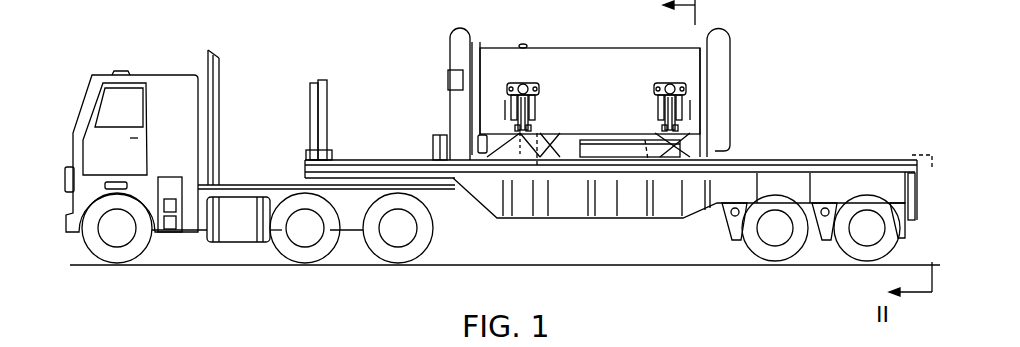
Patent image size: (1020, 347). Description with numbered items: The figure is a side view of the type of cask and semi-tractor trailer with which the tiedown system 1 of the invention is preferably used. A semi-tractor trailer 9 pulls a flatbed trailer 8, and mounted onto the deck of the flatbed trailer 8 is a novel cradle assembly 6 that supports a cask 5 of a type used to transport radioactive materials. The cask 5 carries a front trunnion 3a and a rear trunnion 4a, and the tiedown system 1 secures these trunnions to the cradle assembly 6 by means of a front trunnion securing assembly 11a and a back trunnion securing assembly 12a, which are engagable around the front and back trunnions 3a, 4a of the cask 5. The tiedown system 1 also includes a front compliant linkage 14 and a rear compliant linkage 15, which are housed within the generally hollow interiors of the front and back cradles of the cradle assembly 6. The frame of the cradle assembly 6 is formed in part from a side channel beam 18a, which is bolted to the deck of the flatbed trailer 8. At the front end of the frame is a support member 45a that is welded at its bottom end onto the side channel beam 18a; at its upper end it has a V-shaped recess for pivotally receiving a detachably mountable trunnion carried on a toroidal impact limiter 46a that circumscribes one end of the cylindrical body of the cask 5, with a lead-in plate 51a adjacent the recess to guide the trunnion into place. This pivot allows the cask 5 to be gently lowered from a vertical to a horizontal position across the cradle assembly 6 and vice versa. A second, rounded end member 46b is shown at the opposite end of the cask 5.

The tiedown system 1 is at (551, 115).
The front trunnion 3a is at (525, 83).
The rear trunnion 4a is at (670, 85).
The cask 5 is at (605, 104).
The cradle assembly 6 is at (573, 154).
The flatbed trailer 8 is at (573, 205).
The semi-tractor trailer 9 is at (91, 60).
The front trunnion securing assembly 11a is at (497, 107).
The back trunnion securing assembly 12a is at (754, 106).
The front compliant linkage 14 is at (503, 157).
The rear compliant linkage 15 is at (648, 140).
The side channel beam 18a is at (537, 167).
The support member 45a is at (453, 102).
The toroidal impact limiter 46a is at (757, 93).
The front upright post 46b is at (452, 42).
The lead-in plate 51a is at (448, 72).